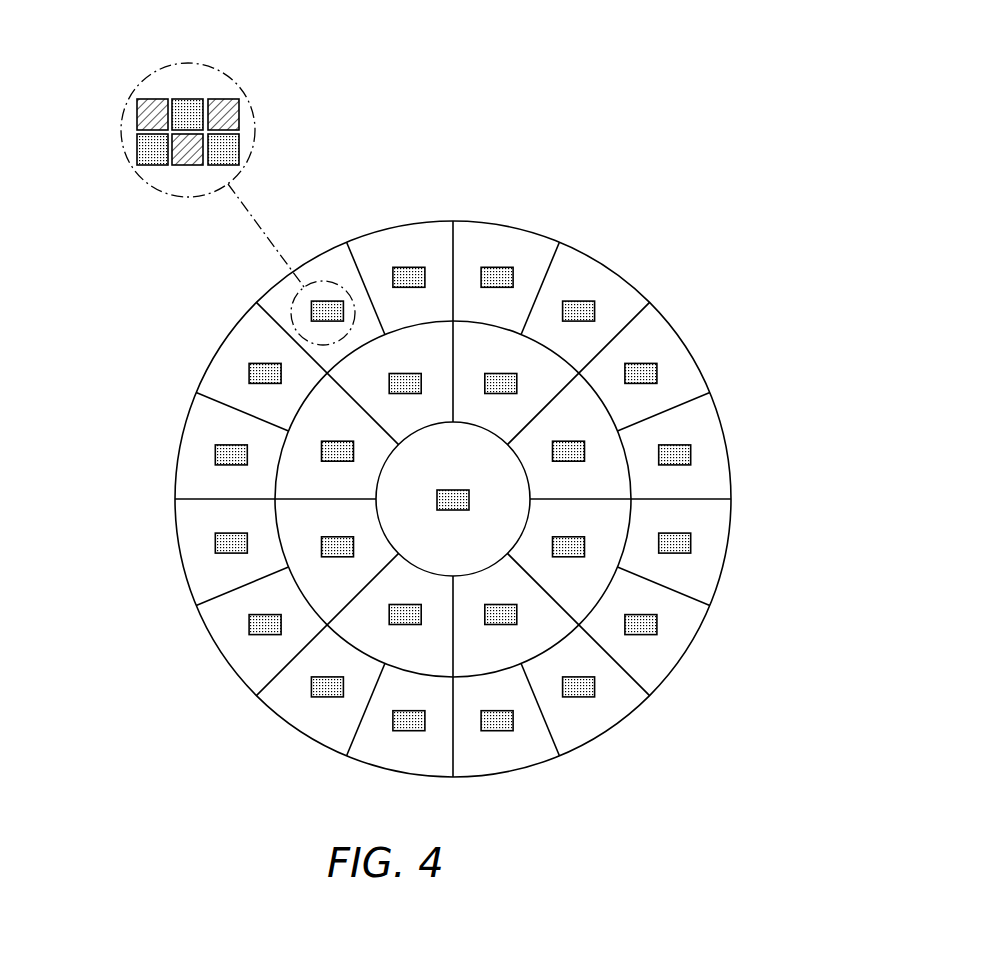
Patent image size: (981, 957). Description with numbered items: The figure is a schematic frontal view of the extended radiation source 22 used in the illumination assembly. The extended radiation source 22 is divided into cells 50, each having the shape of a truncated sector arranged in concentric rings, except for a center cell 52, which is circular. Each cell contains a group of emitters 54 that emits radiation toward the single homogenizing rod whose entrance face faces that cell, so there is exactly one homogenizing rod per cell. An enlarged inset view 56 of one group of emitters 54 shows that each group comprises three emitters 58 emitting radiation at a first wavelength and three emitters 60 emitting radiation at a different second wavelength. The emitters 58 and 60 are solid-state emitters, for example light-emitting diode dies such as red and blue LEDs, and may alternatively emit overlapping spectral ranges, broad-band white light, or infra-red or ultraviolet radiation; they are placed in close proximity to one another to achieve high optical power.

The extended radiation source 22 is at (710, 187).
The cells 50 is at (598, 440).
The center cell 52 is at (393, 515).
The group of emitters 54 is at (407, 268).
The enlarged inset view 56 is at (333, 282).
The emitters 58 is at (145, 112).
The emitters 60 is at (188, 112).